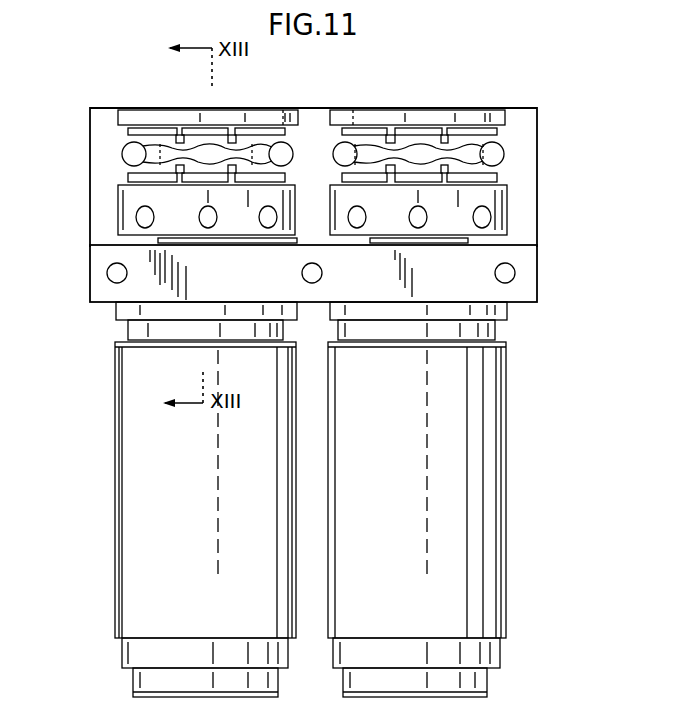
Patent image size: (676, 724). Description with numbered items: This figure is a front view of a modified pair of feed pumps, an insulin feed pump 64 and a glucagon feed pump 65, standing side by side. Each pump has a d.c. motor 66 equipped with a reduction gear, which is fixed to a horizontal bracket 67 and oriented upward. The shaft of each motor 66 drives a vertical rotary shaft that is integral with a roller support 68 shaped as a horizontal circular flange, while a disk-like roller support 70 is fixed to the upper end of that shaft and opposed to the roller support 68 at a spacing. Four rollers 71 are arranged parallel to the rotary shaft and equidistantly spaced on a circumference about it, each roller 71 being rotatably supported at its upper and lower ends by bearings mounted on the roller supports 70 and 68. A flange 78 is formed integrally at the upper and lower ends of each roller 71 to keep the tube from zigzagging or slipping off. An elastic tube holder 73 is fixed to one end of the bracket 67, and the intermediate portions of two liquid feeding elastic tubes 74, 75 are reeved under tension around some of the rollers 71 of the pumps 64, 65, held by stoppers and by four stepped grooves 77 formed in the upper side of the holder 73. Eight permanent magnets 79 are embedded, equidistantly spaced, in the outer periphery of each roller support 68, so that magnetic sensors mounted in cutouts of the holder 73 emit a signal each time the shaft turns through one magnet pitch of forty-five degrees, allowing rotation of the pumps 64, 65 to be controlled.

The insulin feed pump 64 is at (108, 456).
The glucagon feed pump 65 is at (518, 470).
The d.c. motor 66 is at (127, 550).
The horizontal bracket 67 is at (523, 293).
The roller support 68 is at (122, 207).
The disk-like roller support 70 is at (163, 117).
The roller 71 is at (130, 166).
The elastic tube holder 73 is at (105, 108).
The liquid feeding elastic tube 74 is at (128, 152).
The liquid feeding elastic tube 75 is at (503, 152).
The stepped groove 77 is at (283, 110).
The flange 78 is at (130, 132).
The permanent magnet 79 is at (145, 220).